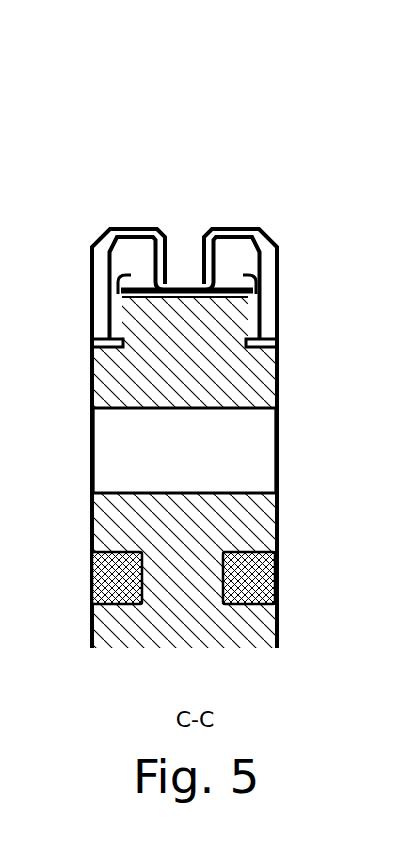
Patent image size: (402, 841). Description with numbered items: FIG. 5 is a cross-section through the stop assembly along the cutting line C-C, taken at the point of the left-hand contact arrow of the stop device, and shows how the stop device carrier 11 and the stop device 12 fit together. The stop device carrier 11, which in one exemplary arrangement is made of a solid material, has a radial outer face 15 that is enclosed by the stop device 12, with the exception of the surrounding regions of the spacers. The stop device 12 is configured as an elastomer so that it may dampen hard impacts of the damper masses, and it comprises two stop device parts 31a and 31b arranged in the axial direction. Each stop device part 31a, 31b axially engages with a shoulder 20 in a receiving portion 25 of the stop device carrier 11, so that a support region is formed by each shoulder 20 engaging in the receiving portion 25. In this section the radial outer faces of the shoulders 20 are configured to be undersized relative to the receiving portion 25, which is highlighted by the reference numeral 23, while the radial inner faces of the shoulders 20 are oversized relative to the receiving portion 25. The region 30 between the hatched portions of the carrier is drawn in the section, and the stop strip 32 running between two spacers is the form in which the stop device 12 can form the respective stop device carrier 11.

The stop device carrier 11 is at (220, 377).
The stop device 12 is at (133, 252).
The radial outer face 15 is at (225, 326).
The shoulder 20 is at (92, 595).
The undersized configuration 23 is at (115, 550).
The receiving portion 25 is at (92, 548).
The cavity 30 is at (227, 466).
The stop device part 31a is at (103, 262).
The stop device part 31b is at (272, 272).
The stop strip 32 is at (126, 605).